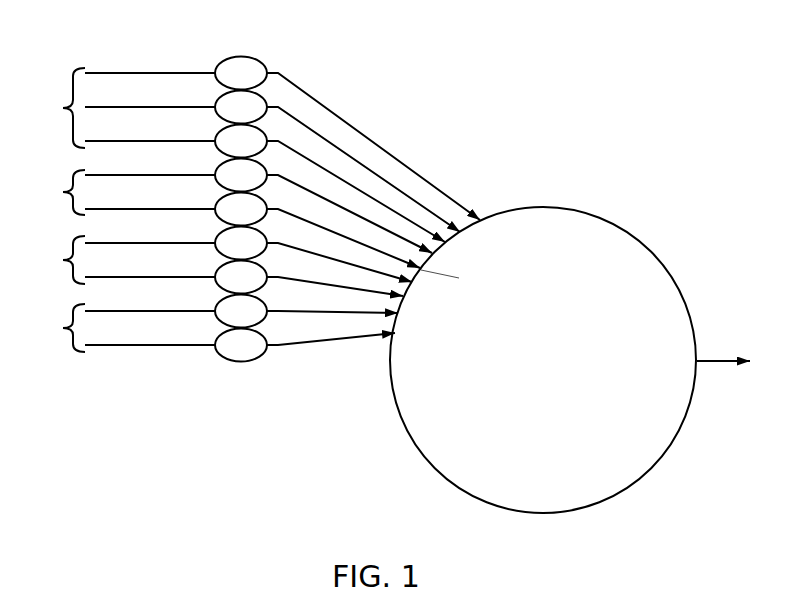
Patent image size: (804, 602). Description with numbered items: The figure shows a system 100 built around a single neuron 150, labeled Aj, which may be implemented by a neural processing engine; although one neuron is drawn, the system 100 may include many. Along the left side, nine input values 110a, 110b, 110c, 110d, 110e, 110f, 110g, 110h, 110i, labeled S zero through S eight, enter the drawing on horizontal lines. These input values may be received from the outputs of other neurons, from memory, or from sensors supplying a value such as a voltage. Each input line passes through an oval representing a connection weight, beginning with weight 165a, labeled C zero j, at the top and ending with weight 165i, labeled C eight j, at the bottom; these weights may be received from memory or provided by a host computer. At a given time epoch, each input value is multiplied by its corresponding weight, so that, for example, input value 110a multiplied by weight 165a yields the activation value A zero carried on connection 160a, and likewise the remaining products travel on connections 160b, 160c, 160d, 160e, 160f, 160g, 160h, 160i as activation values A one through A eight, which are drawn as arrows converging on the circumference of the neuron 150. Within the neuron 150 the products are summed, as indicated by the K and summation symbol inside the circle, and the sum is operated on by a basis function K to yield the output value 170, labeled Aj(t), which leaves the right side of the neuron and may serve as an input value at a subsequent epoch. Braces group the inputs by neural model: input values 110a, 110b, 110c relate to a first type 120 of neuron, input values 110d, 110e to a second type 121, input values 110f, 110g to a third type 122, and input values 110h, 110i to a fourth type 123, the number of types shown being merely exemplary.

The system 100 is at (525, 80).
The input value 110a is at (96, 72).
The input value 110b is at (96, 106).
The input value 110c is at (96, 140).
The input value 110d is at (96, 174).
The input value 110e is at (96, 208).
The input value 110f is at (96, 242).
The input value 110g is at (96, 276).
The input value 110h is at (96, 310).
The input value 110i is at (96, 344).
The first type of neuron 120 is at (52, 108).
The second type of neuron 121 is at (52, 192).
The third type of neuron 122 is at (52, 260).
The fourth type of neuron 123 is at (52, 328).
The neuron 150 is at (645, 244).
The connection 160a is at (278, 73).
The connection 160b is at (280, 106).
The connection 160c is at (282, 140).
The connection 160d is at (284, 174).
The connection 160e is at (286, 208).
The connection 160f is at (270, 243).
The connection 160g is at (274, 277).
The connection 160h is at (270, 310).
The connection 160i is at (272, 343).
The weight 165a is at (233, 57).
The weight 165i is at (243, 361).
The output value 170 is at (712, 363).